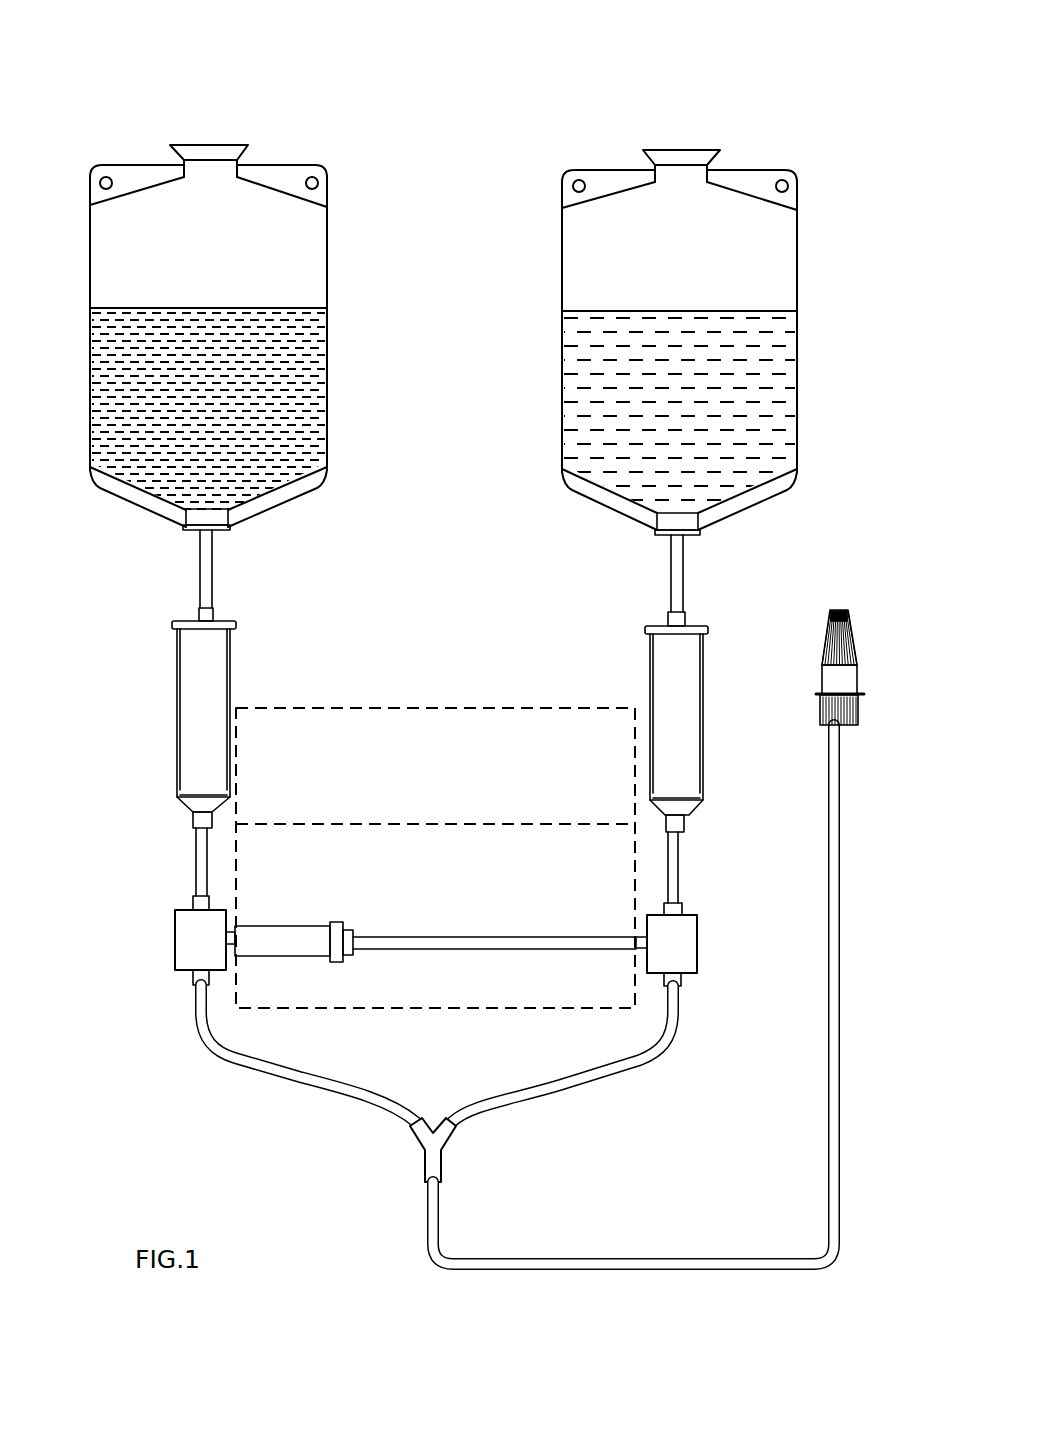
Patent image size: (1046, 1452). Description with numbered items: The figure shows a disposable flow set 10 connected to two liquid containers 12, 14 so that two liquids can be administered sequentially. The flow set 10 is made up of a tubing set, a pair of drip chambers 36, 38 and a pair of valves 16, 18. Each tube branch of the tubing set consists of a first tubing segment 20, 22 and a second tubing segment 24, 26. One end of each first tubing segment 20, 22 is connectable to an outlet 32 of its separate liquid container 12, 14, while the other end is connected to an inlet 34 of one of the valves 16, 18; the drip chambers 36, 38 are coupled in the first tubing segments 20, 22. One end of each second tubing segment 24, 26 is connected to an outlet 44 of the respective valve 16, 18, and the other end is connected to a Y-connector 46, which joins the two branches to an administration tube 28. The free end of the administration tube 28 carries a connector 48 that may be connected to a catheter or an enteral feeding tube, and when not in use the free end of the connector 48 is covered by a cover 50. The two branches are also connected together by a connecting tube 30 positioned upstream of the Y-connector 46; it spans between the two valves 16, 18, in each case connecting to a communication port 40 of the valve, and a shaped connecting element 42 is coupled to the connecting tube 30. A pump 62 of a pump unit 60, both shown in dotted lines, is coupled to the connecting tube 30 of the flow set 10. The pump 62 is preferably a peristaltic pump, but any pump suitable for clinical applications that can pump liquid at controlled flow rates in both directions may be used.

The flow set 10 is at (856, 108).
The liquid container 12 is at (327, 233).
The liquid container 14 is at (797, 236).
The valve 16 is at (175, 938).
The valve 18 is at (697, 937).
The first tubing segment 20 is at (112, 645).
The first tubing segment 22 is at (750, 610).
The second tubing segment 24 is at (316, 1080).
The second tubing segment 26 is at (540, 1095).
The administration tube 28 is at (585, 1258).
The connecting tube 30 is at (475, 950).
The outlet 32 is at (222, 532).
The inlet 34 is at (197, 900).
The drip chamber 36 is at (176, 722).
The drip chamber 38 is at (703, 752).
The communication port 40 is at (203, 1020).
The shaped connecting element 42 is at (288, 948).
The outlet 44 is at (196, 980).
The Y-connector 46 is at (428, 1155).
The connector 48 is at (836, 683).
The cover 50 is at (855, 648).
The pump unit 60 is at (415, 708).
The pump 62 is at (254, 985).